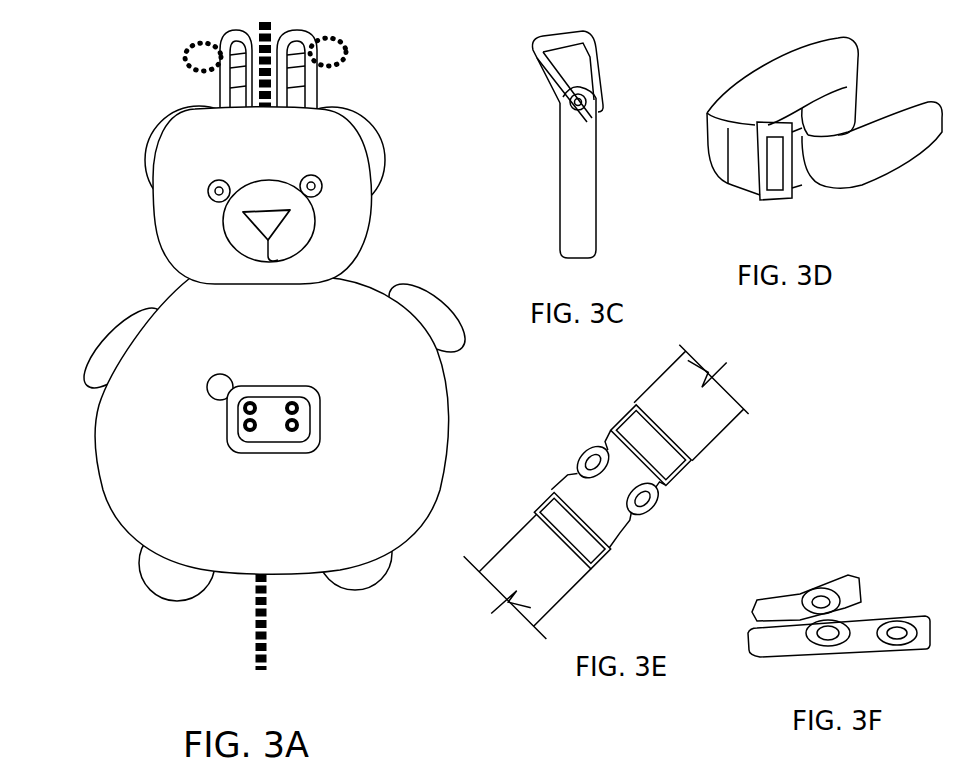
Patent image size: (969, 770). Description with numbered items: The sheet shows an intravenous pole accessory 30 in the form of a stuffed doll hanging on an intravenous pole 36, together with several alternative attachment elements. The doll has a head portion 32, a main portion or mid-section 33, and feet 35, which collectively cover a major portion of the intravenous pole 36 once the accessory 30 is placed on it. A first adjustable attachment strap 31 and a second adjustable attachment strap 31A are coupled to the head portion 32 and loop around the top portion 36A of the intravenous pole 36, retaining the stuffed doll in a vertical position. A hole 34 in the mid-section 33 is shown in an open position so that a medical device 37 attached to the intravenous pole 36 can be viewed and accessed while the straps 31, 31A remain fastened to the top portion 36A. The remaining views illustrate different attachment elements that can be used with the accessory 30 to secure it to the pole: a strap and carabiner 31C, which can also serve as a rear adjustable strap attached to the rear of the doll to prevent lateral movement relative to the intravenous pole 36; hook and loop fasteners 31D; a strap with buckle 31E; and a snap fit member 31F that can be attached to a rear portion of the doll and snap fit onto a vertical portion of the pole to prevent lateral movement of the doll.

In FIG. 3A, the intravenous pole accessory 30 is at (254, 370).
In FIG. 3A, the first adjustable attachment strap 31 is at (222, 87).
In FIG. 3A, the second adjustable attachment strap 31A is at (288, 78).
In FIG. 3A, the head portion 32 is at (160, 180).
In FIG. 3A, the mid-section 33 is at (168, 300).
In FIG. 3A, the hole 34 is at (228, 435).
In FIG. 3A, the feet 35 is at (142, 563).
In FIG. 3A, the intravenous pole 36 is at (253, 640).
In FIG. 3A, the top portion of the intravenous pole 36A is at (188, 53).
In FIG. 3A, the medical device 37 is at (237, 402).
In FIG. 3C, the strap and carabiner 31C is at (605, 291).
In FIG. 3D, the hook and loop fasteners 31D is at (813, 253).
In FIG. 3E, the strap with buckle 31E is at (645, 644).
In FIG. 3F, the snap fit member 31F is at (863, 698).